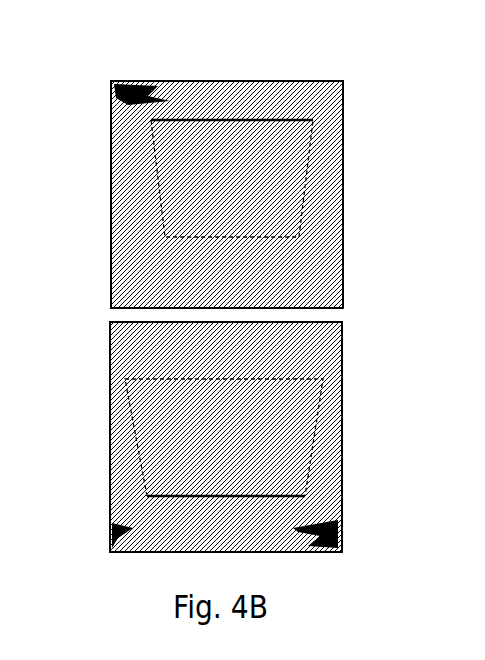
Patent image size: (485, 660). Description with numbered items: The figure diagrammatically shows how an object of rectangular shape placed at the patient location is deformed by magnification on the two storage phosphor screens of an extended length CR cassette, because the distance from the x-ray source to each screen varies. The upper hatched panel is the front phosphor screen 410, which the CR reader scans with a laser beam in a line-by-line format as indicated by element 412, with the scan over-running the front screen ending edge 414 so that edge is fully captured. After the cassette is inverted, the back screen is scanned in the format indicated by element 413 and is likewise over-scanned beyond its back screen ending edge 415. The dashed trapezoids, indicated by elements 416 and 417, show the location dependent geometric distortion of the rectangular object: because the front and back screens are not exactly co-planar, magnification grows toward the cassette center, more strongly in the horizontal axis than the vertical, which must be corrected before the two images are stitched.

The front phosphor screen 410 is at (335, 83).
The line-by-line laser scan format 412 is at (113, 76).
The inverted laser scan format 413 is at (333, 523).
The front screen ending edge 414 is at (335, 292).
The back screen ending edge 415 is at (335, 316).
The geometric distortion of front screen image 416 is at (143, 157).
The geometric distortion of back screen image 417 is at (117, 373).